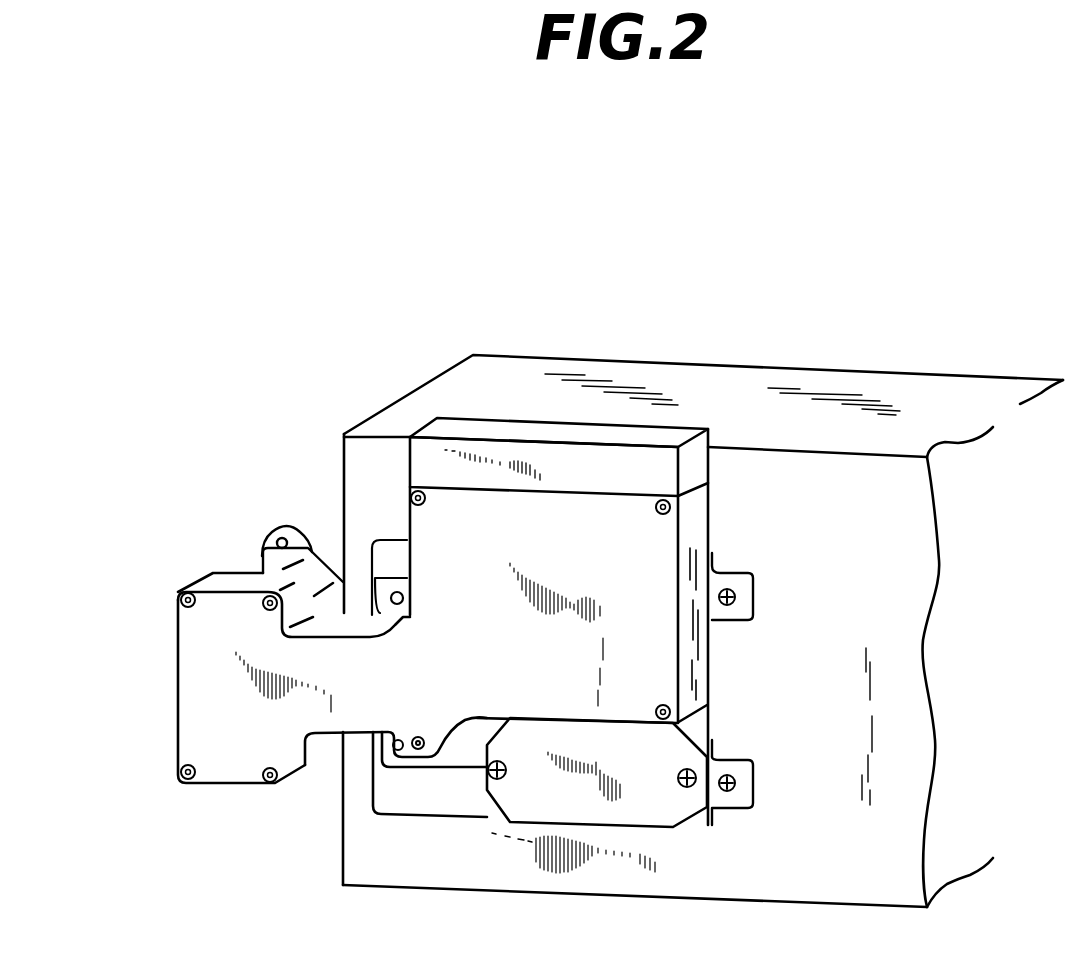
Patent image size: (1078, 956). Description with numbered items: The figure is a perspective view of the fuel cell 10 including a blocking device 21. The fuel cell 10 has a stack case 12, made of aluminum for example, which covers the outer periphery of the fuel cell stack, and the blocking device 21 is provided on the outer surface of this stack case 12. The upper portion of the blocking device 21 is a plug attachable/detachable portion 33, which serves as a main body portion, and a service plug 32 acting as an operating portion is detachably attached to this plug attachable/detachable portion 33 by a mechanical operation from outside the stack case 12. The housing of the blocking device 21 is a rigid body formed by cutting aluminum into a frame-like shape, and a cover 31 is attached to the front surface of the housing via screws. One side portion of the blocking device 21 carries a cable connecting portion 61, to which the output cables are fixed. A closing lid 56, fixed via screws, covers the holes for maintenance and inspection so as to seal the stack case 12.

The fuel cell 10 is at (202, 293).
The stack case 12 is at (613, 375).
The blocking device 21 is at (378, 720).
The cover 31 is at (213, 702).
The service plug 32 is at (488, 430).
The plug attachable/detachable portion 33 is at (455, 505).
The closing lid 56 is at (700, 810).
The cable connecting portion 61 is at (250, 563).